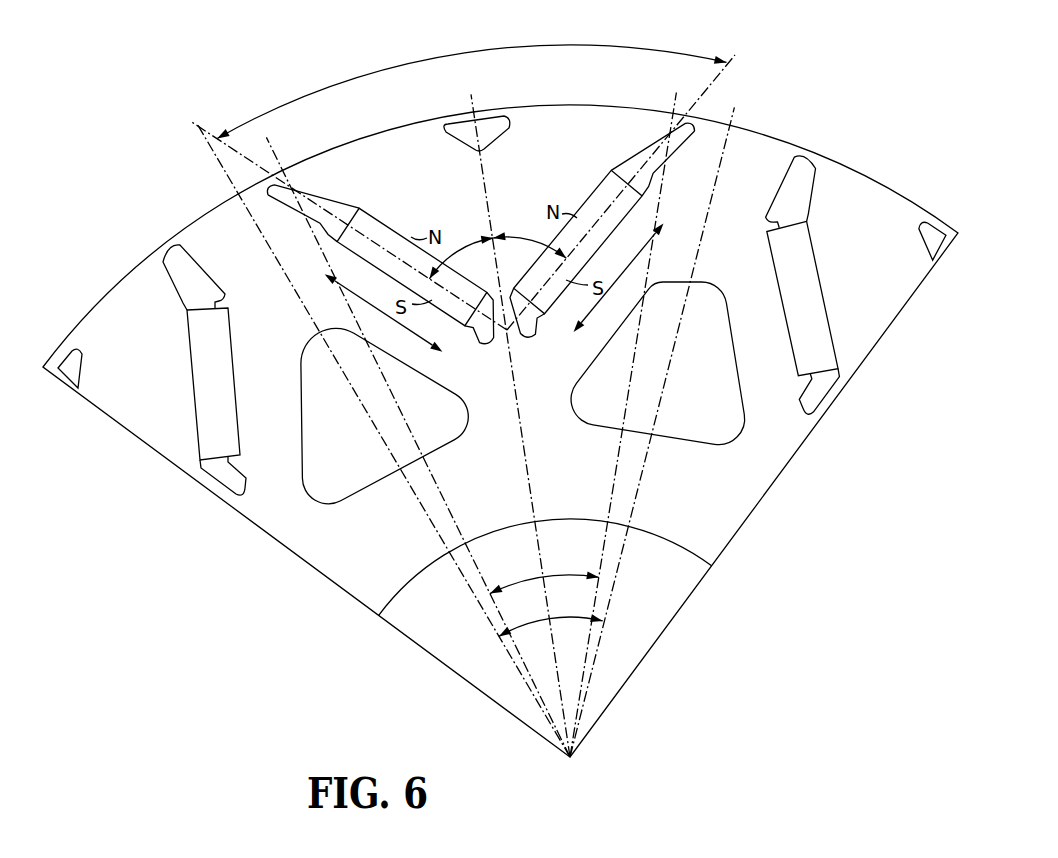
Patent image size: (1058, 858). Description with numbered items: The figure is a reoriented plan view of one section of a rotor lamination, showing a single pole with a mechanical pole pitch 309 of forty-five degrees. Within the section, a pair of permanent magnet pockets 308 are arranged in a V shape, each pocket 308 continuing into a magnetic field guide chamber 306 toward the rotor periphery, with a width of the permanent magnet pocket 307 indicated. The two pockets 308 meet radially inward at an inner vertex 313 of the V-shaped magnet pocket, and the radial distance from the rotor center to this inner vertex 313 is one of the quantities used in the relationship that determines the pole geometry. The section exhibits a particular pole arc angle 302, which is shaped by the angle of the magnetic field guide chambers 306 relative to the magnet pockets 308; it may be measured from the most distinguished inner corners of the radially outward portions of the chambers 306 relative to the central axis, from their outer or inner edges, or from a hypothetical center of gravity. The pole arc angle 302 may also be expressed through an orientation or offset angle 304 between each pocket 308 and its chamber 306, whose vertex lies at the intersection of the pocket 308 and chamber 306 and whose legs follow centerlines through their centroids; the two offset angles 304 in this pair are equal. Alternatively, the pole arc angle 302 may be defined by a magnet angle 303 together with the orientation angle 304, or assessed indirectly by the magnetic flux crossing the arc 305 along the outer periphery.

The pole arc angle 302 is at (513, 582).
The magnet angle 303 is at (459, 247).
The orientation angle 304 is at (325, 196).
The arc 305 is at (433, 57).
The magnetic field guide chamber 306 is at (318, 222).
The width of the permanent magnet pocket 307 is at (404, 331).
The permanent magnet pocket 308 is at (372, 226).
The mechanical pole pitch 309 is at (561, 617).
The inner vertex of the V-shaped magnet pocket 313 is at (512, 329).